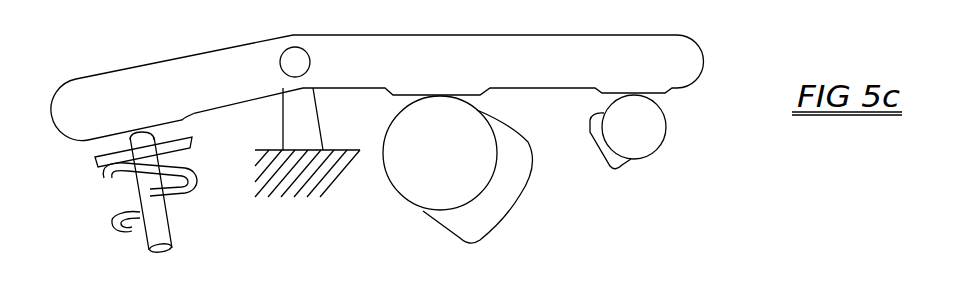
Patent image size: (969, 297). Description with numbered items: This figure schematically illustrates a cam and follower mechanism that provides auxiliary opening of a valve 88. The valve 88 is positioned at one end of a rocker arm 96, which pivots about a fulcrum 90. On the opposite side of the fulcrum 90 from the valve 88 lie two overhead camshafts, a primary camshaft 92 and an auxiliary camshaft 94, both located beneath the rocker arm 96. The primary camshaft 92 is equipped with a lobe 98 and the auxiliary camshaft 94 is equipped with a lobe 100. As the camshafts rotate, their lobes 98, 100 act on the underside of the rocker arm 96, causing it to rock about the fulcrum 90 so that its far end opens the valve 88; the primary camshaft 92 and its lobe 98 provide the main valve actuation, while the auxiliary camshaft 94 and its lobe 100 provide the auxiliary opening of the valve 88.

The valve 88 is at (173, 227).
The fulcrum 90 is at (293, 60).
The primary camshaft 92 is at (403, 200).
The auxiliary camshaft 94 is at (665, 135).
The rocker arm 96 is at (685, 37).
The lobe 98 is at (517, 200).
The lobe 100 is at (592, 153).